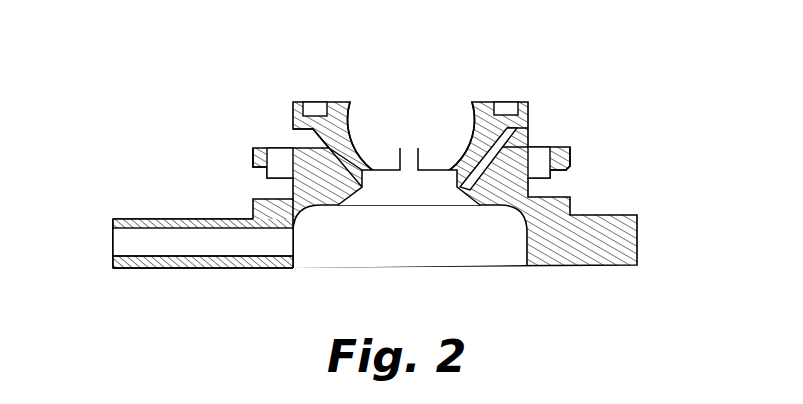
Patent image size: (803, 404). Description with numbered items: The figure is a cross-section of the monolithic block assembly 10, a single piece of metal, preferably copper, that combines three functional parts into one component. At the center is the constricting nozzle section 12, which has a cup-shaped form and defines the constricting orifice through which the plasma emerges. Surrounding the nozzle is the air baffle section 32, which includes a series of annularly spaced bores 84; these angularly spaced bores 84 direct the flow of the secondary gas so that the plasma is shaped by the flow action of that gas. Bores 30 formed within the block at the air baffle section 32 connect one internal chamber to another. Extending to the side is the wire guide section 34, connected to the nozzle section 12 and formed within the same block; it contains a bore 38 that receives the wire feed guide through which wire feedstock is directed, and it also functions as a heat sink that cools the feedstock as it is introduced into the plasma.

The monolithic block assembly 10 is at (368, 173).
The constricting nozzle section 12 is at (430, 148).
The bores 30 is at (278, 158).
The air baffle section 32 is at (312, 163).
The wire guide section 34 is at (267, 265).
The bore 38 is at (120, 244).
The annularly spaced bores 84 is at (355, 128).